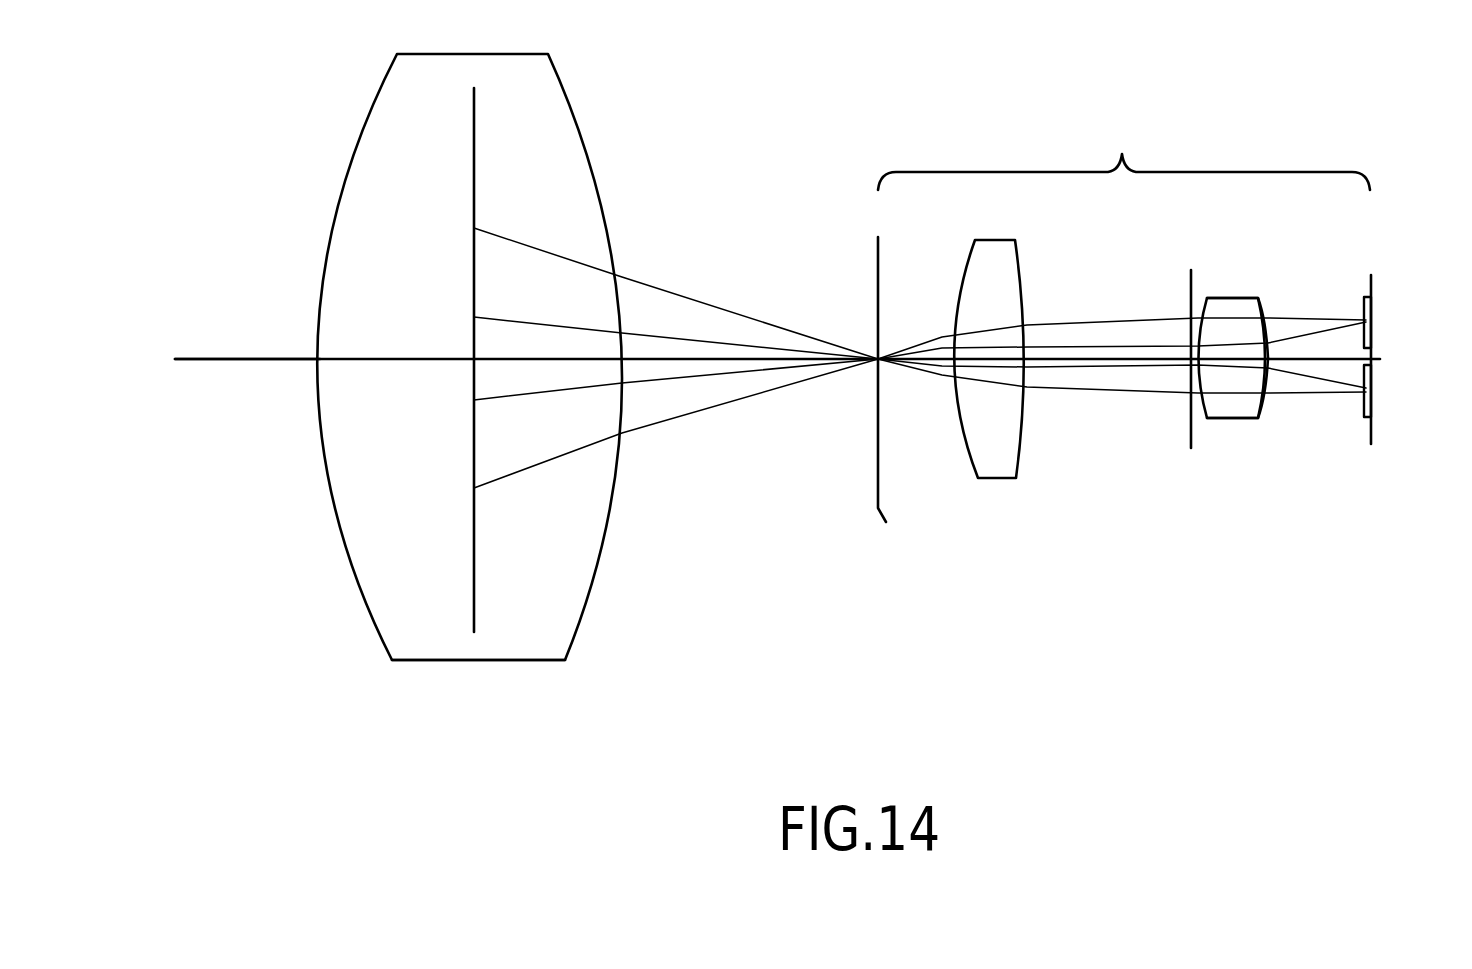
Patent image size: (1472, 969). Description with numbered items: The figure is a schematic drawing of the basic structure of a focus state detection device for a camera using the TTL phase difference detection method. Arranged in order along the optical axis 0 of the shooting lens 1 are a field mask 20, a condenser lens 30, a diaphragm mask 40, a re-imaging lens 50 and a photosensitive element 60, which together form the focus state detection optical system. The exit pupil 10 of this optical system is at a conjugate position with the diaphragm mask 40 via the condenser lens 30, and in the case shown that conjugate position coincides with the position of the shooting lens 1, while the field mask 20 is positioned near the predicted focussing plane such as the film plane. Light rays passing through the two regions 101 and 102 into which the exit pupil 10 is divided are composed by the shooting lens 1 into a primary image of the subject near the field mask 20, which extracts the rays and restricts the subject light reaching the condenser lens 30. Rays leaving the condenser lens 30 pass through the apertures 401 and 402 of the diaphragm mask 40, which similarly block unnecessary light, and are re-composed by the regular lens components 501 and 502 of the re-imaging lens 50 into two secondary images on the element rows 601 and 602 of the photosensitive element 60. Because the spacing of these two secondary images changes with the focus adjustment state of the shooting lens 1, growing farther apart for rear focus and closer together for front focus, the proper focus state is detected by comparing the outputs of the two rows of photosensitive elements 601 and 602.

The optical axis 0 is at (208, 361).
The shooting lens 1 is at (478, 661).
The exit pupil 10 is at (474, 614).
The region of the exit pupil 101 is at (472, 524).
The region of the exit pupil 102 is at (472, 288).
The field mask 20 is at (886, 522).
The condenser lens 30 is at (1016, 478).
The diaphragm mask 40 is at (1191, 448).
The aperture of the diaphragm mask 401 is at (1124, 324).
The aperture of the diaphragm mask 402 is at (1122, 381).
The re-imaging lens 50 is at (1220, 428).
The regular lens component 501 is at (1264, 308).
The regular lens component 502 is at (1254, 420).
The photosensitive element 60 is at (1372, 447).
The row of photosensitive elements 601 is at (1373, 316).
The row of photosensitive elements 602 is at (1373, 374).